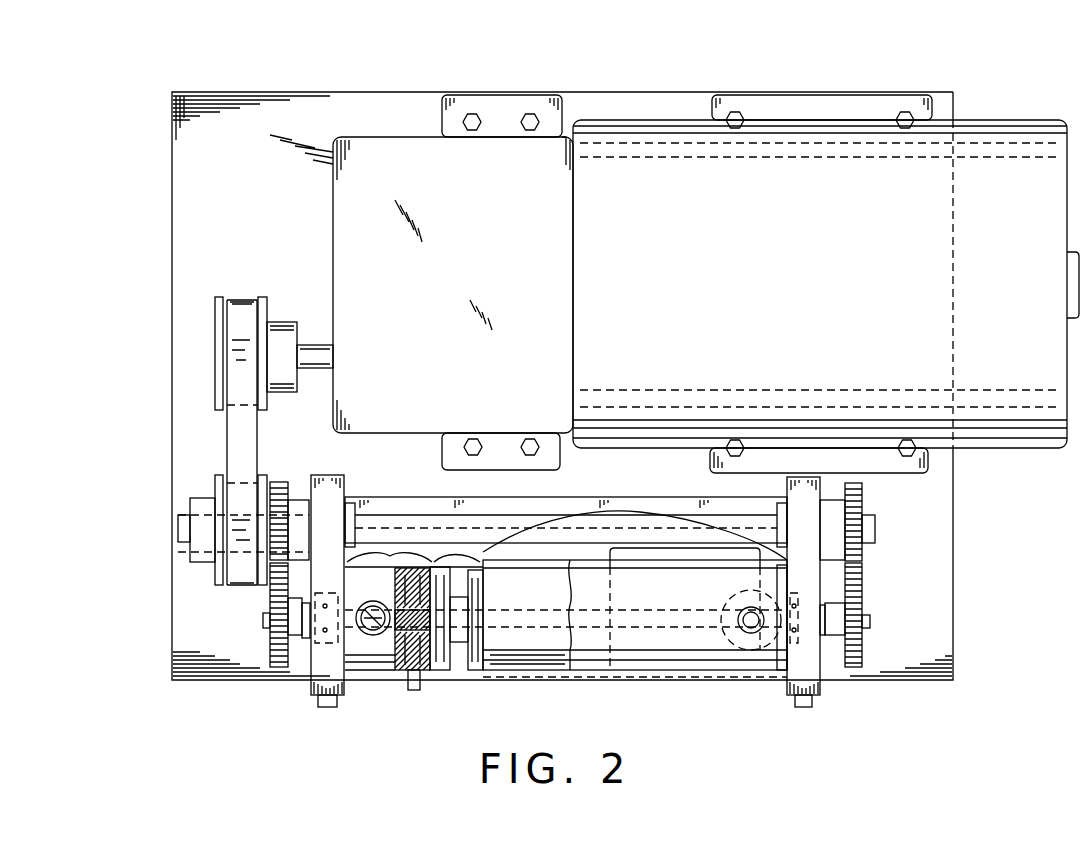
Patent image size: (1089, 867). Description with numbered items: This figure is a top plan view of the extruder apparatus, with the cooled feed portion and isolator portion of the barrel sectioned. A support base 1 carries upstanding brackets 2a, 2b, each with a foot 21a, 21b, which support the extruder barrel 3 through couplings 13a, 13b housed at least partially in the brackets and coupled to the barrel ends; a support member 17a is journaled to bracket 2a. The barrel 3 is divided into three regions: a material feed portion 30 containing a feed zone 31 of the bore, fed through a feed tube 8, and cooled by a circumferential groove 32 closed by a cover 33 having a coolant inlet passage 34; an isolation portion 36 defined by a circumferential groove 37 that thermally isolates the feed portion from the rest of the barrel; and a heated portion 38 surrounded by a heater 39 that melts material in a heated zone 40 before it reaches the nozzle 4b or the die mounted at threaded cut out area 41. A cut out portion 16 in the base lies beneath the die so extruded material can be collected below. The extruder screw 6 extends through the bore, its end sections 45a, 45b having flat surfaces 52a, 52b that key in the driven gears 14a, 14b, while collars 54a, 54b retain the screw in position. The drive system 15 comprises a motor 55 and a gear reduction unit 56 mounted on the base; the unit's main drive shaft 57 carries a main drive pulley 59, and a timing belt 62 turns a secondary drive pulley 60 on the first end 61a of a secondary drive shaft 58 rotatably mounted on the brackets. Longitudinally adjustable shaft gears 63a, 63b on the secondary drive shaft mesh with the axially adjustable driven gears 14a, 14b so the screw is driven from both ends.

The support base 1 is at (183, 193).
The drive system 15 is at (574, 120).
The motor 55 is at (802, 281).
The gear reduction unit 56 is at (446, 266).
The main drive shaft 57 is at (315, 350).
The main drive pulley 59 is at (218, 310).
The timing belt 62 is at (235, 440).
The secondary drive pulley 60 is at (218, 486).
The secondary drive shaft 58 is at (182, 535).
The first end of secondary drive shaft 61a is at (186, 548).
The shaft gear 63a is at (281, 482).
The driven gear 14a is at (272, 642).
The flat surface 52a is at (266, 612).
The end section of extruder screw 45a is at (262, 620).
The collar 54a is at (306, 640).
The upstanding bracket 2a is at (312, 680).
The foot 21a is at (318, 702).
The upstanding bracket 2b is at (815, 680).
The foot 21b is at (795, 702).
The support member 17a is at (487, 505).
The material feed portion 30 is at (393, 556).
The isolation portion 36 is at (460, 552).
The heated portion 38 is at (620, 512).
The cut out portion 16 is at (665, 560).
The extruder barrel 3 is at (680, 660).
The heater 39 is at (555, 650).
The heated zone 40 is at (593, 628).
The coupling 13a is at (352, 680).
The coupling 13b is at (780, 645).
The feed zone 31 is at (398, 655).
The extruder screw 6 is at (425, 616).
The feed tube 8 is at (366, 606).
The circumferential groove 32 is at (435, 668).
The cover 33 is at (425, 668).
The coolant inlet passage 34 is at (414, 690).
The circumferential groove 37 is at (472, 575).
The nozzle 4b is at (740, 624).
The cut out area 41 is at (722, 605).
The shaft gear 63b is at (858, 503).
The driven gear 14b is at (860, 660).
The flat surface 52b is at (862, 610).
The end section of extruder screw 45b is at (870, 618).
The collar 54b is at (835, 615).